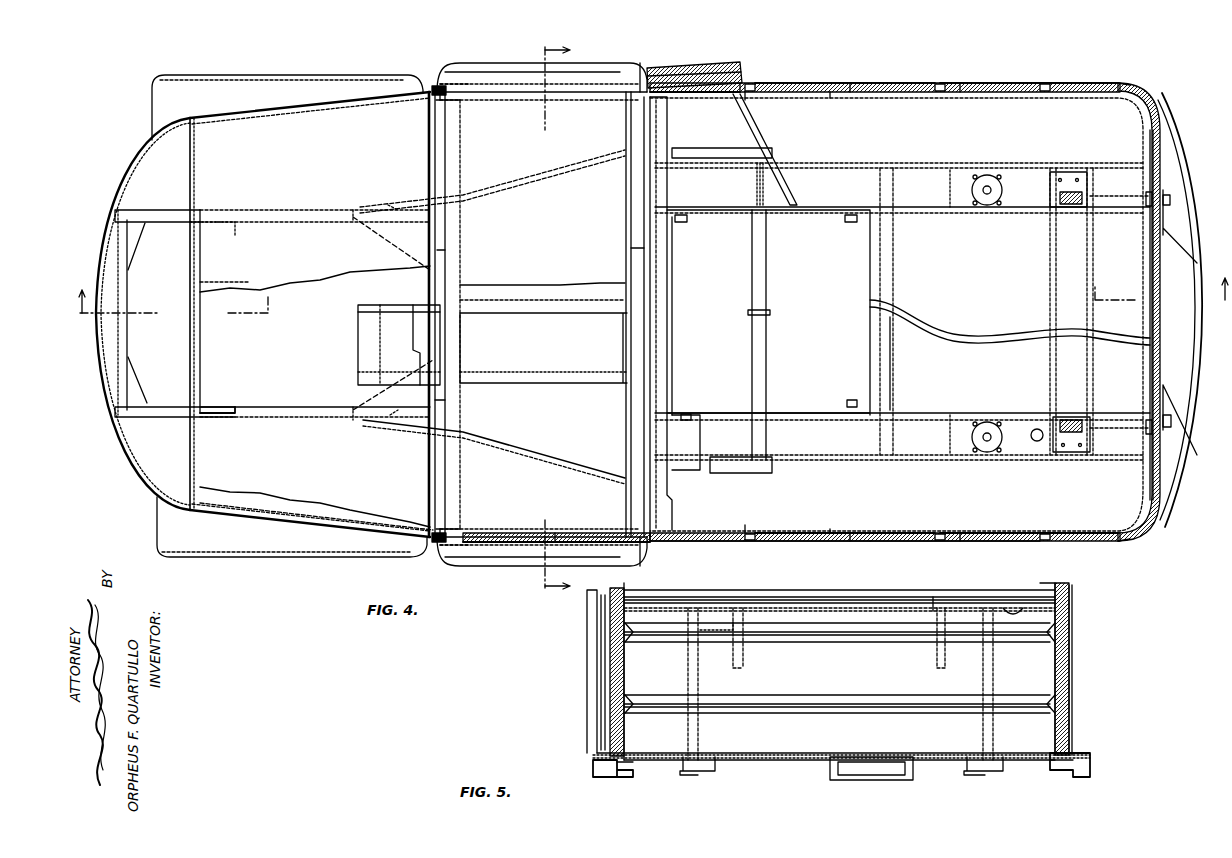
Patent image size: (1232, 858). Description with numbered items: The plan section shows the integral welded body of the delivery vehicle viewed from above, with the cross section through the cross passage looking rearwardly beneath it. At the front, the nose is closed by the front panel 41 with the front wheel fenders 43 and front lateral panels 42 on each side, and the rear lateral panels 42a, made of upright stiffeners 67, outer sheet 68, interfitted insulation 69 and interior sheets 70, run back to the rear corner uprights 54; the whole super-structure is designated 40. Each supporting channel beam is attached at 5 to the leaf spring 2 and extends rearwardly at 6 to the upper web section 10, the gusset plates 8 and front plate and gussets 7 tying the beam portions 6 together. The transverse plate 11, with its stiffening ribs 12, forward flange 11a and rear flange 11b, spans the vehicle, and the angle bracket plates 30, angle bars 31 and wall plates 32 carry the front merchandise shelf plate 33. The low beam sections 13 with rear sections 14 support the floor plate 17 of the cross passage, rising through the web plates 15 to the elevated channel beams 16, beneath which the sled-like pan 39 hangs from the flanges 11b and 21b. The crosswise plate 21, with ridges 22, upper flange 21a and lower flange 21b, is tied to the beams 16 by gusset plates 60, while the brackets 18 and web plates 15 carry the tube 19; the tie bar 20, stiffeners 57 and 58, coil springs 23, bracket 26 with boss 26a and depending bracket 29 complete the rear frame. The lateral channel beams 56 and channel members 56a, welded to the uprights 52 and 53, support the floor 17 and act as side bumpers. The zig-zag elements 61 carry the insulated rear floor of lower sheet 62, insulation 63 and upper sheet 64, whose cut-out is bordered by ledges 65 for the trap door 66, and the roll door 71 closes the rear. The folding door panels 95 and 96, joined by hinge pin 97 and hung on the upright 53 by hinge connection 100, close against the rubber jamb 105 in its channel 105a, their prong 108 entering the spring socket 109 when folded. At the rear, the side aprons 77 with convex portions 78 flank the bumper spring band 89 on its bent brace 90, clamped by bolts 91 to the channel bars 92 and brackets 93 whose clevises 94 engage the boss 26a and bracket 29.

In FIG. 4, the leaf spring 2 is at (651, 285).
In FIG. 4, the front attachment point 5 is at (546, 317).
In FIG. 4, the beam portion 6 is at (283, 212).
In FIG. 4, the transverse channel plate and gussets 7 is at (128, 303).
In FIG. 4, the gusset plate 8 is at (370, 240).
In FIG. 4, the upper web plate section 10 is at (393, 205).
In FIG. 4, the transverse plate 11 is at (447, 358).
In FIG. 4, the forwardly extending flange 11a is at (415, 282).
In FIG. 4, the rearwardly directed flange 11b is at (447, 249).
In FIG. 4, the stiffening rib 12 is at (447, 404).
In FIG. 4, the beam section 13 is at (365, 205).
In FIG. 5, the beam section 13 is at (715, 772).
In FIG. 4, the rear beam section 14 is at (726, 148).
In FIG. 4, the web plate 15 is at (698, 162).
In FIG. 5, the web plate 15 is at (688, 672).
In FIG. 4, the channel beam 16 is at (720, 212).
In FIG. 5, the channel beam 16 is at (718, 642).
In FIG. 4, the floor plate 17 is at (568, 268).
In FIG. 5, the floor plate 17 is at (790, 755).
In FIG. 4, the bracket 18 is at (720, 222).
In FIG. 4, the tube 19 is at (768, 340).
In FIG. 4, the transverse tie bar 20 is at (1150, 270).
In FIG. 4, the crosswise plate 21 is at (643, 220).
In FIG. 5, the crosswise plate 21 is at (839, 655).
In FIG. 4, the rearwardly extending flange 21a is at (672, 266).
In FIG. 5, the rearwardly extending flange 21a is at (875, 594).
In FIG. 4, the forwardly directed flange 21b is at (625, 249).
In FIG. 5, the forwardly directed flange 21b is at (760, 762).
In FIG. 4, the reinforcing ridge 22 is at (625, 190).
In FIG. 5, the reinforcing ridge 22 is at (1020, 636).
In FIG. 4, the coil spring 23 is at (1003, 200).
In FIG. 4, the upstanding bracket 26 is at (1040, 442).
In FIG. 4, the apertured boss 26a is at (1068, 420).
In FIG. 4, the depending apertured bracket 29 is at (1052, 175).
In FIG. 4, the angle bracket plate 30 is at (212, 228).
In FIG. 4, the angle bar 31 is at (203, 326).
In FIG. 4, the wall plate 32 is at (190, 342).
In FIG. 4, the front merchandise shelf plate 33 is at (260, 290).
In FIG. 4, the sled-like pan 39 is at (357, 335).
In FIG. 5, the sled-like pan 39 is at (867, 780).
In FIG. 4, the super-structure 40 is at (955, 550).
In FIG. 4, the front panel 41 is at (121, 183).
In FIG. 4, the front lateral panel 42 is at (258, 110).
In FIG. 4, the rear lateral panel 42a is at (830, 558).
In FIG. 4, the front wheel fender 43 is at (206, 85).
In FIG. 4, the front upright 52 is at (430, 104).
In FIG. 4, the rear upright 53 is at (641, 66).
In FIG. 5, the rear upright 53 is at (627, 590).
In FIG. 4, the rear corner upright 54 is at (1120, 82).
In FIG. 4, the lateral channel beam 56 is at (498, 104).
In FIG. 5, the lateral channel beam 56 is at (635, 776).
In FIG. 4, the channel shaped member 56a is at (490, 580).
In FIG. 5, the channel shaped member 56a is at (1095, 787).
In FIG. 4, the crosswise stiffener 57 is at (891, 367).
In FIG. 4, the crosswise stiffener 58 is at (1049, 298).
In FIG. 4, the gusset plate 60 is at (684, 222).
In FIG. 5, the gusset plate 60 is at (745, 662).
In FIG. 4, the zig-zag element 61 is at (733, 93).
In FIG. 4, the lower sheet 62 is at (772, 178).
In FIG. 5, the lower sheet 62 is at (1017, 608).
In FIG. 4, the insulation 63 is at (798, 186).
In FIG. 4, the upper sheet 64 is at (795, 145).
In FIG. 5, the upper sheet 64 is at (952, 597).
In FIG. 4, the ledge 65 is at (669, 334).
In FIG. 4, the trap door 66 is at (798, 545).
In FIG. 5, the trap door 66 is at (805, 597).
In FIG. 4, the upright stiffener 67 is at (945, 82).
In FIG. 4, the outer sheet 68 is at (897, 82).
In FIG. 4, the insulation 69 is at (878, 94).
In FIG. 5, the insulation 69 is at (605, 733).
In FIG. 4, the interior sheet 70 is at (960, 94).
In FIG. 4, the rear flexible roll door 71 is at (1155, 328).
In FIG. 4, the side apron 77 is at (992, 82).
In FIG. 4, the fender-simulating convex portion 78 is at (1073, 82).
In FIG. 4, the spring band 89 is at (1195, 470).
In FIG. 4, the bent brace 90 is at (1181, 322).
In FIG. 4, the bolt and nut combination 91 is at (1171, 201).
In FIG. 4, the channel bar 92 is at (1149, 208).
In FIG. 4, the bracket 93 is at (1143, 196).
In FIG. 4, the clevis 94 is at (1068, 185).
In FIG. 4, the door panel 95 is at (696, 62).
In FIG. 5, the door panel 95 is at (586, 630).
In FIG. 4, the door panel 96 is at (732, 66).
In FIG. 5, the door panel 96 is at (600, 668).
In FIG. 4, the hinge pin 97 is at (745, 75).
In FIG. 5, the hinge pin 97 is at (1054, 722).
In FIG. 4, the hinge connection 100 is at (660, 66).
In FIG. 5, the hinge connection 100 is at (608, 700).
In FIG. 4, the soft rubber jamb 105 is at (455, 82).
In FIG. 4, the channel 105a is at (452, 98).
In FIG. 4, the spear head prong 108 is at (748, 84).
In FIG. 4, the spring socket 109 is at (752, 88).